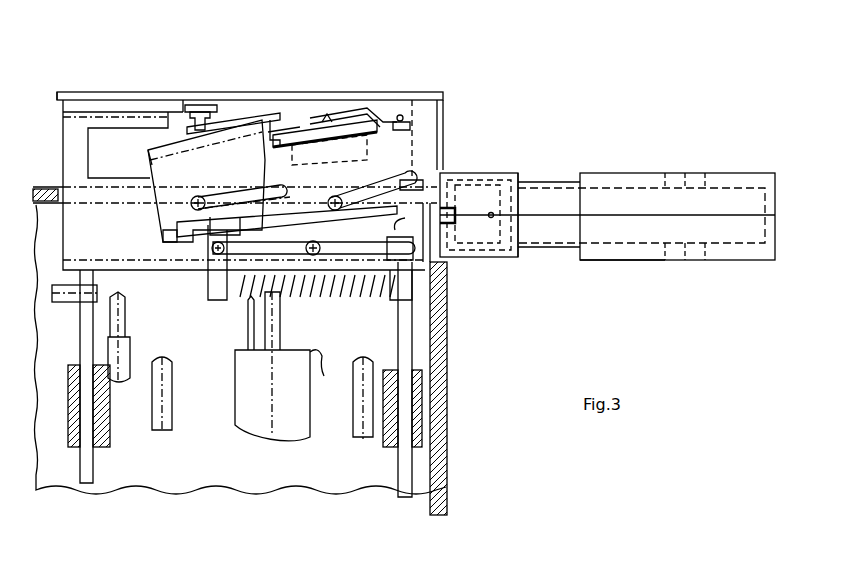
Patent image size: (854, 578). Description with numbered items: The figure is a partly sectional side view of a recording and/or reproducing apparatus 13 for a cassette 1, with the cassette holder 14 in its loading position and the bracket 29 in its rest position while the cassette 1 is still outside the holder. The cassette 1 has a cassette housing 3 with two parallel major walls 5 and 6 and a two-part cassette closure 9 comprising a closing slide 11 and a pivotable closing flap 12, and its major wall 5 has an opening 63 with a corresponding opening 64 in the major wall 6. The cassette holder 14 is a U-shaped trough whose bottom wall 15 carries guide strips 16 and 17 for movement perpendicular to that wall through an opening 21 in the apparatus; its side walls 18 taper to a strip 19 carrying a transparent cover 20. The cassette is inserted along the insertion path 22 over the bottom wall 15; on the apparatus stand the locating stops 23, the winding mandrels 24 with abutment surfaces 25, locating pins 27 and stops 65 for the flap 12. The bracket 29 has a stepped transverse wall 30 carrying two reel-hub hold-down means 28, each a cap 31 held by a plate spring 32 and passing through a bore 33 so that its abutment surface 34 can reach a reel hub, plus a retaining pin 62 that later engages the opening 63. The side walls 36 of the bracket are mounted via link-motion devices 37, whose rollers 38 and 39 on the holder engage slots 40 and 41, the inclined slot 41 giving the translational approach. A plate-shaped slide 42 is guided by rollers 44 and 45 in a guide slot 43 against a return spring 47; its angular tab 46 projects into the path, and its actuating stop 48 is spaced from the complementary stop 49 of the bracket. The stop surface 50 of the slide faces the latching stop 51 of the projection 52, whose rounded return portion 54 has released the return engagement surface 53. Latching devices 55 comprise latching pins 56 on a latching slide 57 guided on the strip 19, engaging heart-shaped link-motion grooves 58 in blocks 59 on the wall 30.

The cassette 1 is at (724, 169).
The cassette housing 3 is at (560, 196).
The major wall 5 is at (646, 173).
The major wall 6 is at (614, 260).
The cassette closure 9 is at (480, 170).
The closing slide 11 is at (518, 176).
The closing flap 12 is at (502, 227).
The recording and/or reproducing apparatus 13 is at (447, 460).
The cassette holder 14 is at (60, 212).
The bottom wall 15 is at (126, 273).
The guide strip 16 is at (80, 473).
The guide strip 17 is at (398, 484).
The side wall 18 is at (64, 143).
The strip 19 is at (64, 98).
The transparent cover 20 is at (100, 92).
The opening 21 is at (54, 186).
The insertion path 22 is at (258, 215).
The locating stop 23 is at (166, 416).
The winding mandrel 24 is at (268, 434).
The abutment surface 25 is at (324, 373).
The locating pin 27 is at (120, 372).
The reel-hub hold-down means 28 is at (323, 106).
The bracket 29 is at (144, 151).
The transverse wall 30 is at (276, 128).
The cap 31 is at (300, 135).
The plate spring 32 is at (340, 116).
The bore 33 is at (400, 121).
The abutment surface 34 is at (356, 146).
The side wall 36 is at (151, 164).
The link-motion device 37 is at (370, 323).
The roller 38 is at (198, 196).
The roller 39 is at (330, 198).
The slot 40 is at (266, 190).
The slot 41 is at (412, 175).
The slide 42 is at (276, 282).
The guide slot 43 is at (405, 258).
The roller 44 is at (230, 288).
The roller 45 is at (320, 256).
The angular tab 46 is at (230, 202).
The return spring 47 is at (248, 304).
The actuating stop 48 is at (214, 254).
The complementary stop 49 is at (178, 243).
The stop surface 50 is at (403, 288).
The latching stop 51 is at (454, 235).
The projection 52 is at (454, 192).
The return engagement surface 53 is at (412, 257).
The return portion 54 is at (420, 175).
The latching device 55 is at (218, 114).
The latching pin 56 is at (183, 124).
The latching slide 57 is at (194, 112).
The link-motion groove 58 is at (240, 127).
The block 59 is at (274, 120).
The pin 62 is at (416, 100).
The opening 63 is at (686, 178).
The opening 64 is at (688, 255).
The stop 65 is at (68, 302).